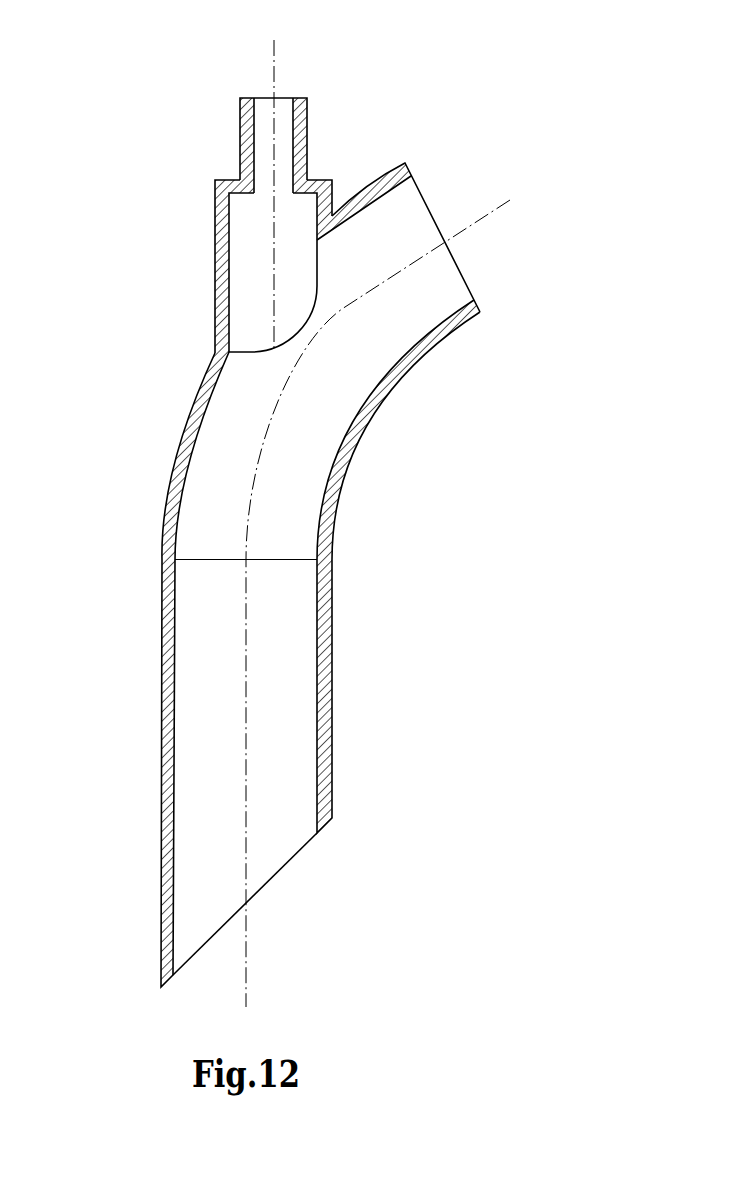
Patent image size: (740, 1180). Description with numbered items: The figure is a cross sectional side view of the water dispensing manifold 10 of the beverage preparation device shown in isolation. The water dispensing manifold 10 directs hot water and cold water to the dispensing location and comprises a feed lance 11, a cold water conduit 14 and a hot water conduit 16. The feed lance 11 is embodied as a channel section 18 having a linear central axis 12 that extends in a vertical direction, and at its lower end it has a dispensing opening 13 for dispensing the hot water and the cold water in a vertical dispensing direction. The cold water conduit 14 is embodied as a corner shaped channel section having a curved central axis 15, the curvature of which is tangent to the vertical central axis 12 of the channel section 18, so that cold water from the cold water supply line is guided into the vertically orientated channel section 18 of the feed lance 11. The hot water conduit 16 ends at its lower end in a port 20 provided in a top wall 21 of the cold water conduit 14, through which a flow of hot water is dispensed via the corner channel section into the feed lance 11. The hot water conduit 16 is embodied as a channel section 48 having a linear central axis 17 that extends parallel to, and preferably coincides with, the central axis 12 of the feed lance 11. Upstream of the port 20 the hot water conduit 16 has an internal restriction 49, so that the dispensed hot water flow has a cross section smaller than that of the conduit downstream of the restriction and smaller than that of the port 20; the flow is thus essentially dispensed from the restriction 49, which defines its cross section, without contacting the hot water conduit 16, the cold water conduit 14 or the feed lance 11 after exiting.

The water dispensing manifold 10 is at (550, 158).
The feed lance 11 is at (148, 790).
The linear central axis 12 is at (246, 695).
The dispensing opening 13 is at (273, 892).
The cold water conduit 14 is at (167, 418).
The curved central axis 15 is at (295, 377).
The hot water conduit 16 is at (197, 235).
The linear central axis 17 is at (273, 147).
The channel section 18 is at (283, 750).
The port 20 is at (322, 303).
The top wall 21 is at (208, 365).
The channel section 48 is at (293, 227).
The internal restriction 49 is at (229, 171).